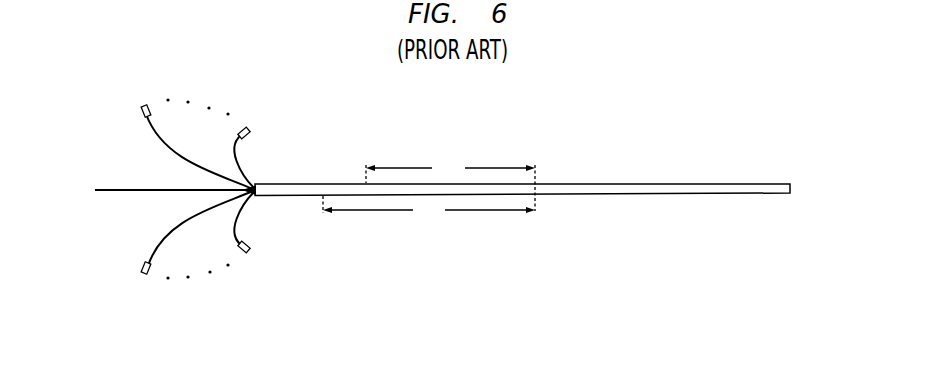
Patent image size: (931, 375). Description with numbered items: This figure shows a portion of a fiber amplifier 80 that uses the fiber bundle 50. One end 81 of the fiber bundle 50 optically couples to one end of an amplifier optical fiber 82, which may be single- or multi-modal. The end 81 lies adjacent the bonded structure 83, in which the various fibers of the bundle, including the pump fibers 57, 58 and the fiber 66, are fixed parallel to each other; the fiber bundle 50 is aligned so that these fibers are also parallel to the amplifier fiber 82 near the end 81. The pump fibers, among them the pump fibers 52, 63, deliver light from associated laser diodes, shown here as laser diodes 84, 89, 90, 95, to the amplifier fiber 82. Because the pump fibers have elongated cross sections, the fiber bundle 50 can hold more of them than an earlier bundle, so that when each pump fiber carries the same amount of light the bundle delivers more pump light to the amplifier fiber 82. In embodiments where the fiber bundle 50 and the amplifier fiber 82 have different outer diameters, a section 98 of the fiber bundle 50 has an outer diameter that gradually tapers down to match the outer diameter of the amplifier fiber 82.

The fiber bundle 50 is at (348, 239).
The pump fiber 52 is at (239, 150).
The pump fiber 57 is at (168, 151).
The pump fiber 58 is at (170, 228).
The pump fiber 63 is at (240, 222).
The fiber 66 is at (106, 192).
The fiber amplifier 80 is at (583, 288).
The end 81 is at (540, 199).
The amplifier optical fiber 82 is at (658, 196).
The bonded structure 83 is at (429, 208).
The laser diode 84 is at (250, 128).
The laser diode 89 is at (141, 115).
The laser diode 90 is at (141, 264).
The laser diode 95 is at (250, 250).
The section 98 is at (450, 167).